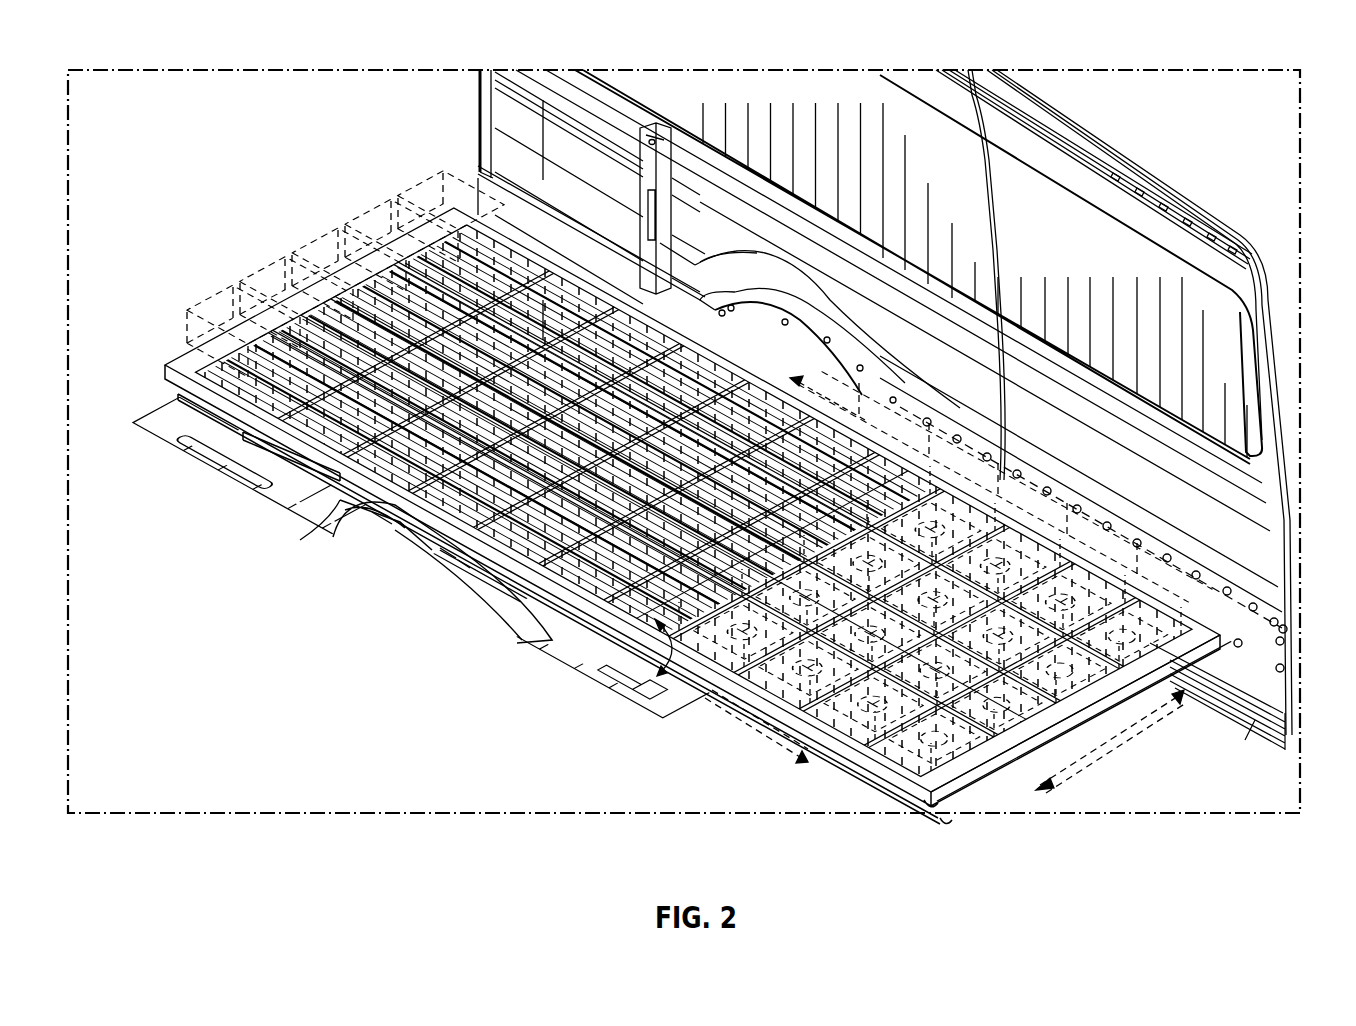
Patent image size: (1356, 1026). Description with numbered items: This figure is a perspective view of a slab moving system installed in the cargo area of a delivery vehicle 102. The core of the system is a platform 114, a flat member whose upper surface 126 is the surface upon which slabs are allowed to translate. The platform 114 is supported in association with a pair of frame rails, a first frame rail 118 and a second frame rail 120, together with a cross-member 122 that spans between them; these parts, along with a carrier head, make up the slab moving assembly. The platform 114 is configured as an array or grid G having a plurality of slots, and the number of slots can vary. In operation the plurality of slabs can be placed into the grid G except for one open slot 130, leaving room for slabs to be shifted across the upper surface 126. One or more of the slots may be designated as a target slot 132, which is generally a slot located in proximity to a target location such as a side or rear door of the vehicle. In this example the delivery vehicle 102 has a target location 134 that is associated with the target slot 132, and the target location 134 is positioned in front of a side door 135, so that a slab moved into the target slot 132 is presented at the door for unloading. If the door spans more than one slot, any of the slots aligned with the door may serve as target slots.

The delivery vehicle 102 is at (1252, 45).
The platform 114 is at (960, 792).
The first frame rail 118 is at (857, 768).
The second frame rail 120 is at (1222, 665).
The cross-member 122 is at (972, 762).
The upper surface 126 is at (590, 622).
The open slot 130 is at (632, 660).
The target slot 132 is at (1090, 592).
The target location 134 is at (1075, 470).
The side door 135 is at (1082, 254).
The grid G is at (274, 244).